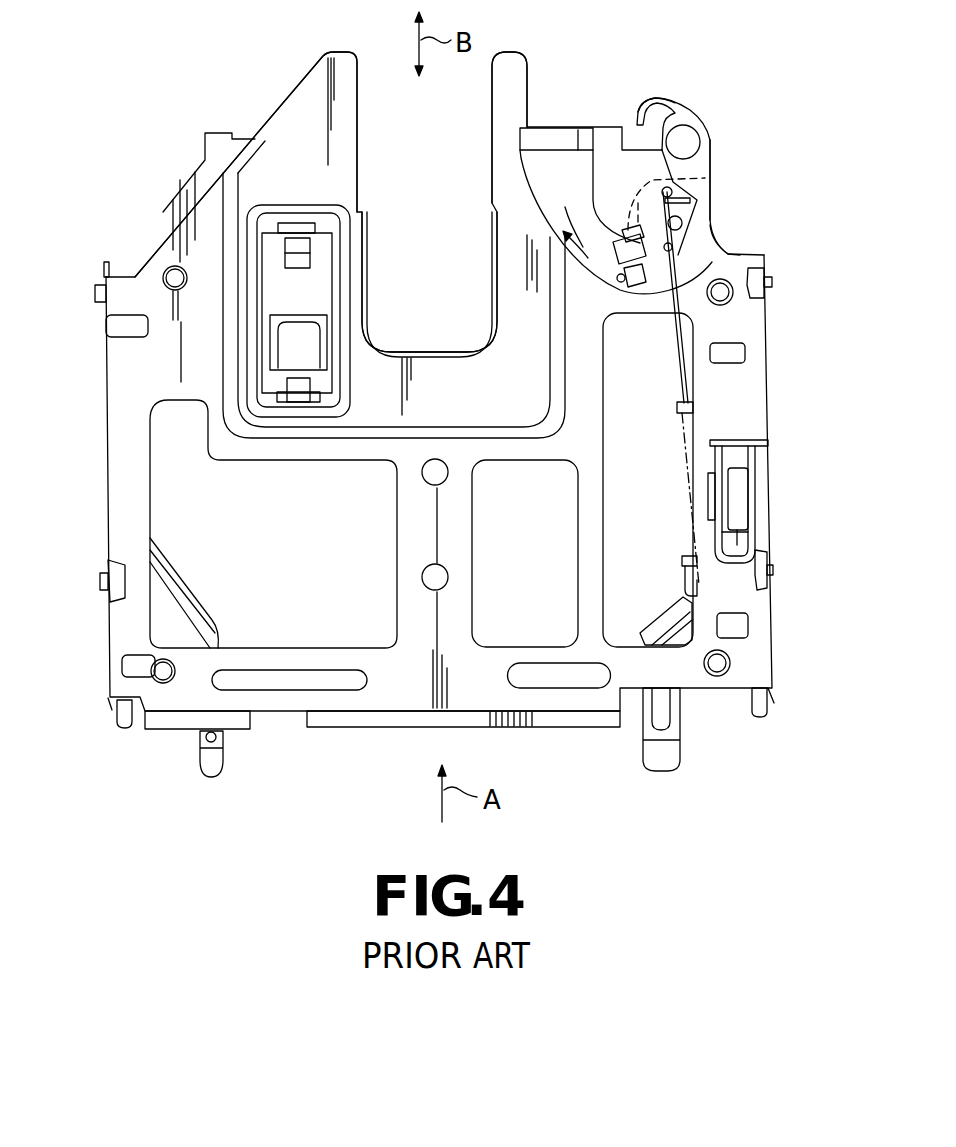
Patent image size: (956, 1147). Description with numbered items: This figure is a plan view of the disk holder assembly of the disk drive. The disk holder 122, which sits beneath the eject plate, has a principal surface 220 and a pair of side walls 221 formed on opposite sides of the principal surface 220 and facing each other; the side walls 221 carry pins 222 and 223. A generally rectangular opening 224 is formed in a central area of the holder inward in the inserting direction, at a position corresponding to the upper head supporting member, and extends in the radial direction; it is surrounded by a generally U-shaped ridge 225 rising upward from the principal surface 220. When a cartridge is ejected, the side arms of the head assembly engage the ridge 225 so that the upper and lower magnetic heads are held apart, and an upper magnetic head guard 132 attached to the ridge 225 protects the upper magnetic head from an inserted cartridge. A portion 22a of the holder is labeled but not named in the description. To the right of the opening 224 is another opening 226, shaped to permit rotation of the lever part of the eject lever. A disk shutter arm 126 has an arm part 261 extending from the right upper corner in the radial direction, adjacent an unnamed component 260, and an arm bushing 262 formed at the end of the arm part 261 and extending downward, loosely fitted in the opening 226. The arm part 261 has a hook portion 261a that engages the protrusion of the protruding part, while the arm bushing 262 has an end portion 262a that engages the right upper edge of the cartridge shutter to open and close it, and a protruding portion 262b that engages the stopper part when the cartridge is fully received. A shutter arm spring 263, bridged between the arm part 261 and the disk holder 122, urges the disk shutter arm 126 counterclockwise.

The disk holder 122 is at (115, 436).
The principal surface 220 is at (380, 697).
The side walls 221 is at (770, 476).
The pin 222 is at (95, 294).
The pin 223 is at (100, 586).
The opening 224 is at (490, 118).
The U-shaped ridge 225 is at (300, 113).
The opening 226 is at (533, 177).
The U-shaped channel 22a is at (366, 258).
The upper magnetic head guard 132 is at (273, 272).
The disk shutter arm 126 is at (712, 157).
The pivot pin 260 is at (687, 137).
The arm part 261 is at (690, 218).
The hook portion 261a is at (638, 112).
The arm bushing 262 is at (594, 197).
The end portion 262a is at (728, 254).
The protruding portion 262b is at (705, 178).
The shutter arm spring 263 is at (688, 420).